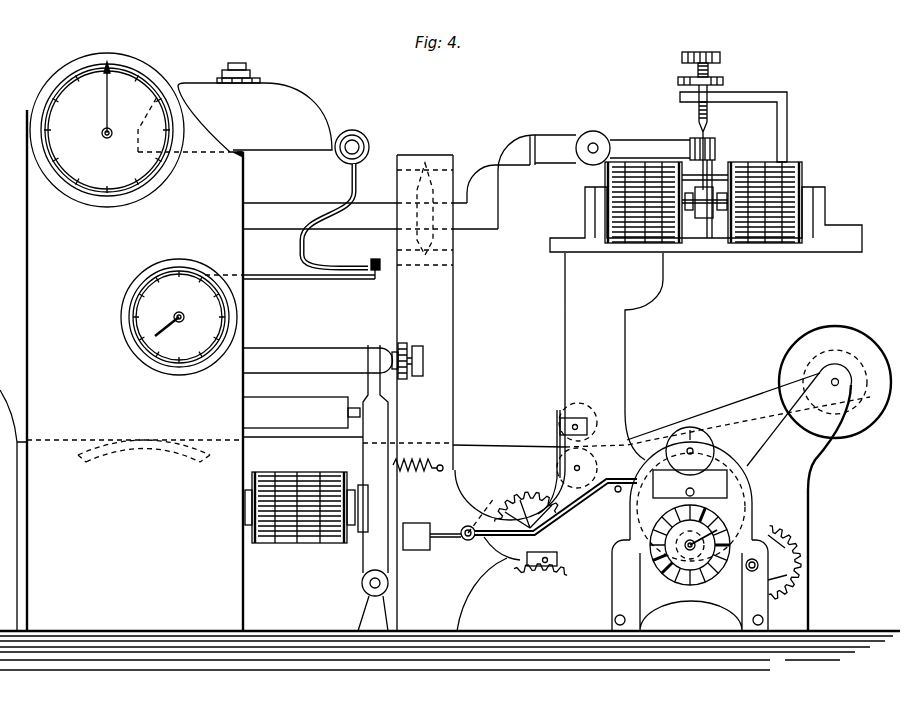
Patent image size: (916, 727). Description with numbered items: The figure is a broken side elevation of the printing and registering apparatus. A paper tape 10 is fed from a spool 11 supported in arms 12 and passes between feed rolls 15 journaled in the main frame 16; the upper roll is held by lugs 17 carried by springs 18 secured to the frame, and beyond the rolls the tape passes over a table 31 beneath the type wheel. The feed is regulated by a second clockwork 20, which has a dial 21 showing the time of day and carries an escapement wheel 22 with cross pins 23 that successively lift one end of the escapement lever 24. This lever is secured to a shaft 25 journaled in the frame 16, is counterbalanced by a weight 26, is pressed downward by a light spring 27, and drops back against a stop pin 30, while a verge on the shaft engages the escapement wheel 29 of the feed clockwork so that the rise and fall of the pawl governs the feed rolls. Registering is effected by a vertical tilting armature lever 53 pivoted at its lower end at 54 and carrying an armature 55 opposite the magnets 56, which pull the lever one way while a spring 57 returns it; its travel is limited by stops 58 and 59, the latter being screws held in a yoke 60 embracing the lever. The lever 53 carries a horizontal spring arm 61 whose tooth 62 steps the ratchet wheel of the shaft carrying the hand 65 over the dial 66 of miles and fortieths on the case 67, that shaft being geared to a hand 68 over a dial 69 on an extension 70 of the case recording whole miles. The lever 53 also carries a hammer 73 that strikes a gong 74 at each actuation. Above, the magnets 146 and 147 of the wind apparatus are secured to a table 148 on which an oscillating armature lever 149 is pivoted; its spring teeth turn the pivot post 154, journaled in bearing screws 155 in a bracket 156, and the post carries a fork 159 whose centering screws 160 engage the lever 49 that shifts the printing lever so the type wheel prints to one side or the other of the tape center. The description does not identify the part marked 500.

The tape 10 is at (483, 446).
The spool 11 is at (847, 436).
The arms 12 is at (798, 473).
The feed rolls 15 is at (562, 408).
The main frame 16 is at (643, 372).
The lugs 17 is at (568, 423).
The springs 18 is at (555, 442).
The second clockwork 20 is at (773, 550).
The dial 21 is at (690, 565).
The escapement wheel 22 is at (664, 436).
The cross pins 23 is at (482, 505).
The escapement lever 24 is at (590, 506).
The shaft 25 is at (468, 541).
The weight 26 is at (418, 551).
The light spring 27 is at (507, 565).
The escapement wheel 29 is at (526, 502).
The stop pin 30 is at (617, 492).
The table 31 is at (160, 444).
The lever 49 is at (287, 227).
The tilting armature lever 53 is at (390, 423).
The pivot 54 is at (362, 584).
The armature 55 is at (370, 510).
The magnets 56 is at (337, 544).
The spring 57 is at (418, 457).
The stop 58 is at (301, 412).
The stop 59 is at (424, 358).
The yoke 60 is at (318, 352).
The spring arm 61 is at (290, 285).
The tooth 62 is at (160, 273).
The hand 65 is at (160, 323).
The dial 66 is at (153, 357).
The case 67 is at (35, 370).
The hand 68 is at (111, 130).
The dial 69 is at (107, 130).
The extension 70 is at (157, 72).
The hammer 73 is at (351, 178).
The gong 74 is at (255, 110).
The magnet 146 is at (637, 243).
The magnet 147 is at (783, 243).
The table 148 is at (721, 252).
The oscillating armature lever 149 is at (700, 218).
The pivot post 154 is at (717, 132).
The bearing screws 155 is at (720, 68).
The bracket 156 is at (788, 102).
The fork 159 is at (558, 138).
The centering screws 160 is at (617, 130).
The column 500 is at (451, 170).